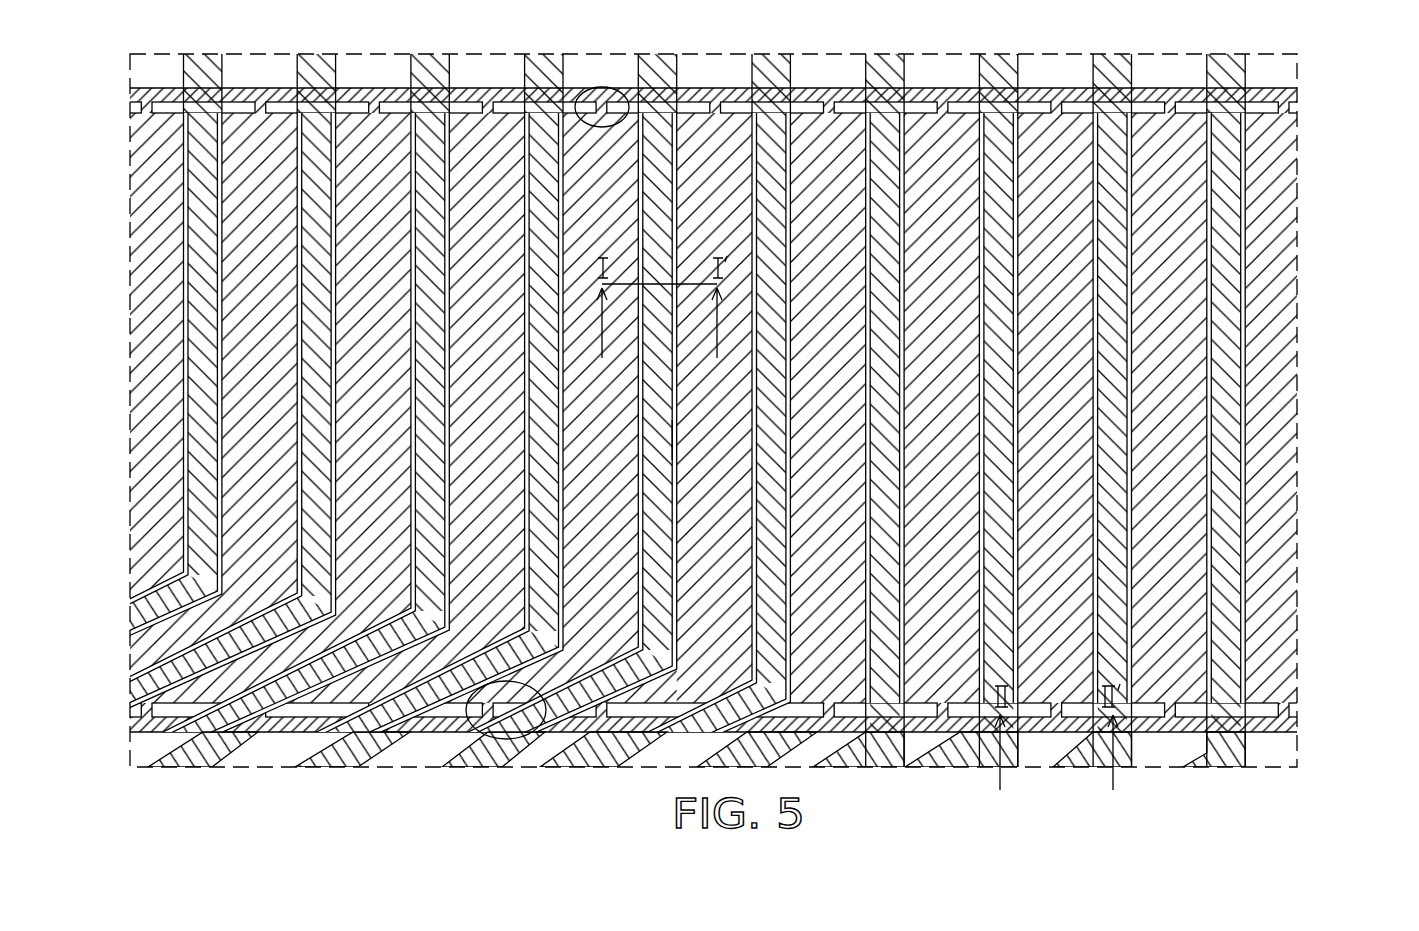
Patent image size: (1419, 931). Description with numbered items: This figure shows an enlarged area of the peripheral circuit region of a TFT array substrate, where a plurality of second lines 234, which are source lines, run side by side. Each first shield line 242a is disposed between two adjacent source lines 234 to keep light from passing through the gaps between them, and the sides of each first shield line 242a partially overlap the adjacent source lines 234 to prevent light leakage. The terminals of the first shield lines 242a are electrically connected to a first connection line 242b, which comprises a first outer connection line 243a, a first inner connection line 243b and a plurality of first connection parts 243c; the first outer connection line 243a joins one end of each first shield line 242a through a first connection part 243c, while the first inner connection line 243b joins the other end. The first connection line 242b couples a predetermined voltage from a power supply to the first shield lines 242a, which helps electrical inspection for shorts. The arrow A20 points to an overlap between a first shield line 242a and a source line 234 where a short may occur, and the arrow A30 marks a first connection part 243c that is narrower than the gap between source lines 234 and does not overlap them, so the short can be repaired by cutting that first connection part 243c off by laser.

The first shield line 242a is at (1185, 590).
The first connection line 242b is at (1283, 80).
The first outer connection line 243a is at (1258, 728).
The first inner connection line 243b is at (1286, 97).
The first connection part 243c is at (1290, 107).
The second line 234 is at (1224, 660).
The arrow A30 is at (575, 143).
The arrow A20 is at (690, 447).